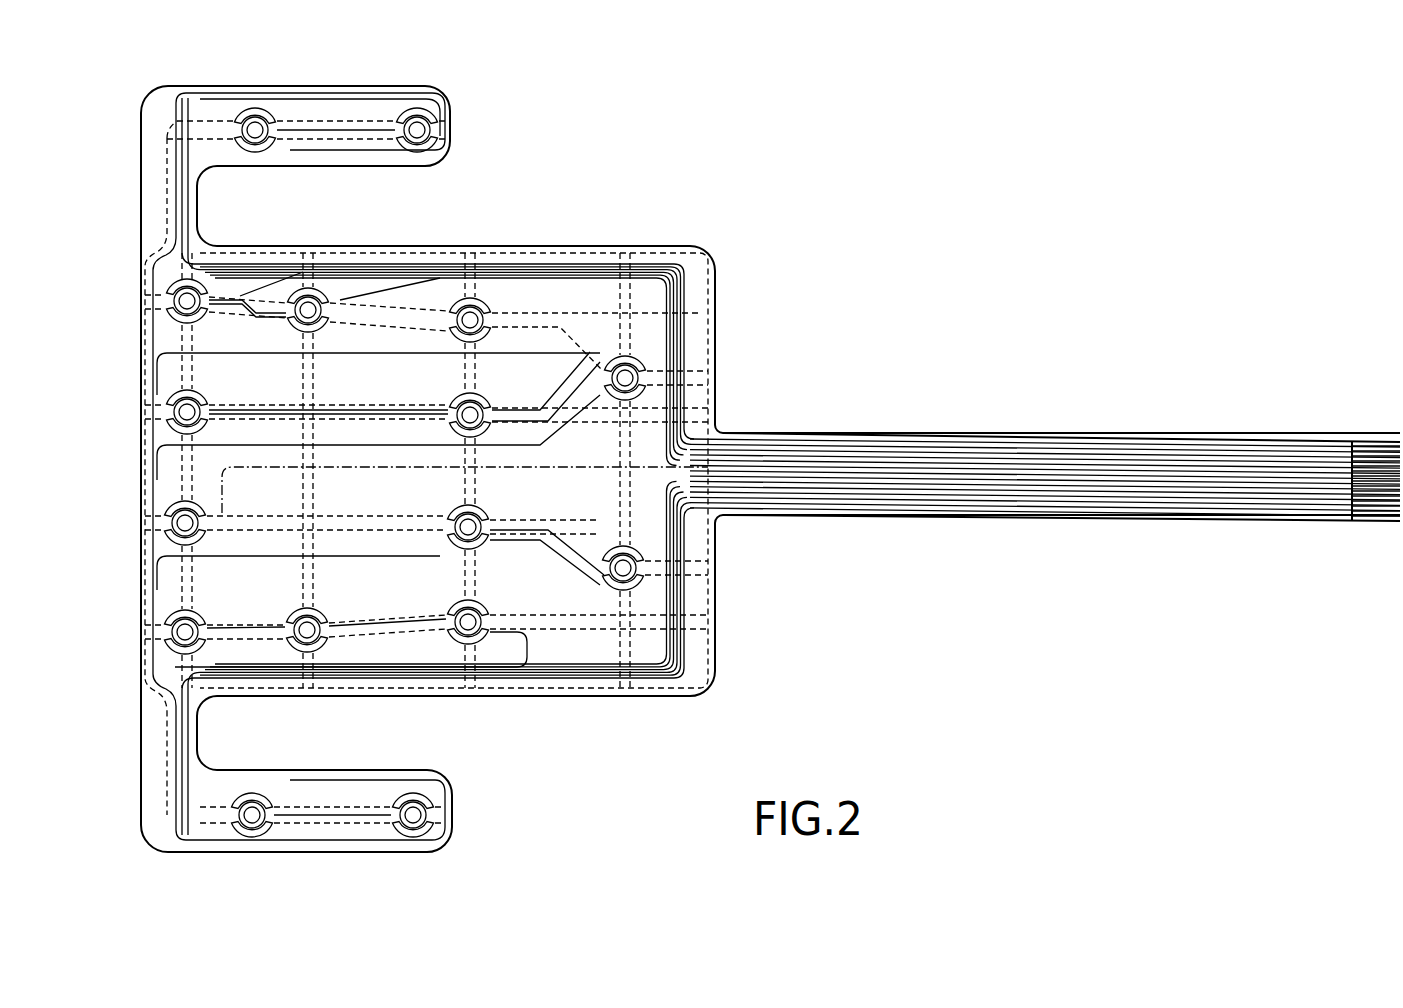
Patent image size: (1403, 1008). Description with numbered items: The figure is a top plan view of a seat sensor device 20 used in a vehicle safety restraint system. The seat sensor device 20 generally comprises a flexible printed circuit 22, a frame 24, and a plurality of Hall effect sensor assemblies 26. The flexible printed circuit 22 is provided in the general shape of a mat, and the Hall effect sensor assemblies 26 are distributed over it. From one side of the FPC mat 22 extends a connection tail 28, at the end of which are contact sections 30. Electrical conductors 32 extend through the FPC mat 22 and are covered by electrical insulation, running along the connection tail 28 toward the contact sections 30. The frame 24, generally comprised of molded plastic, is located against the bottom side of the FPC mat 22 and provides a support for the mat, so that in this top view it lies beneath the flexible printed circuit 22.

The seat sensor device 20 is at (150, 64).
The flexible printed circuit 22 is at (695, 280).
The frame 24 is at (616, 253).
The Hall effect sensor assemblies 26 is at (327, 290).
The connection tail 28 is at (1047, 522).
The contact sections 30 is at (1391, 522).
The electrical conductors 32 is at (888, 470).